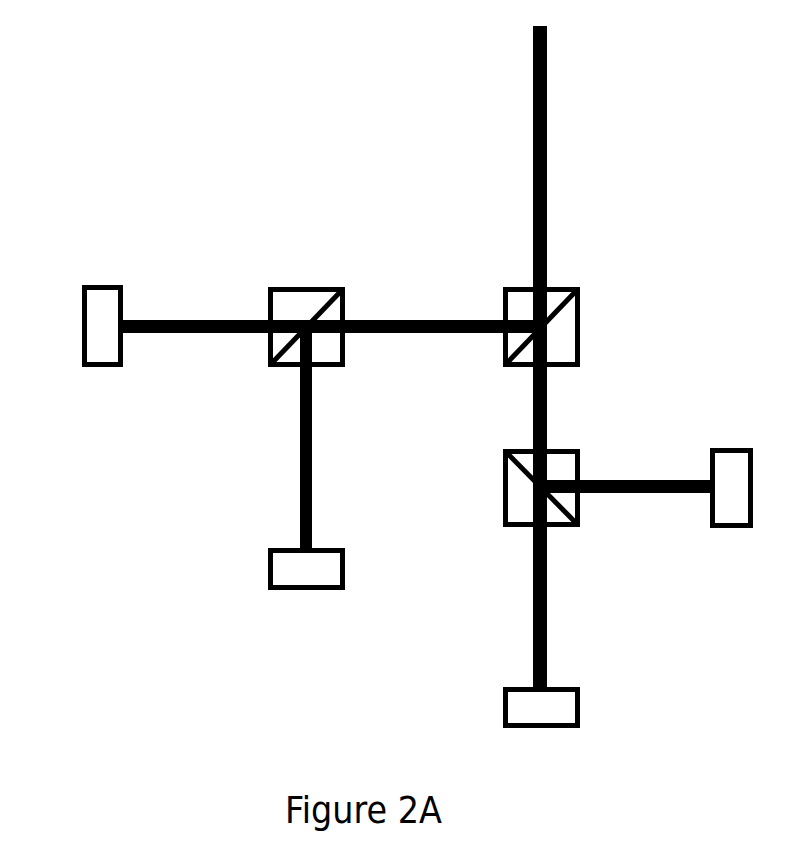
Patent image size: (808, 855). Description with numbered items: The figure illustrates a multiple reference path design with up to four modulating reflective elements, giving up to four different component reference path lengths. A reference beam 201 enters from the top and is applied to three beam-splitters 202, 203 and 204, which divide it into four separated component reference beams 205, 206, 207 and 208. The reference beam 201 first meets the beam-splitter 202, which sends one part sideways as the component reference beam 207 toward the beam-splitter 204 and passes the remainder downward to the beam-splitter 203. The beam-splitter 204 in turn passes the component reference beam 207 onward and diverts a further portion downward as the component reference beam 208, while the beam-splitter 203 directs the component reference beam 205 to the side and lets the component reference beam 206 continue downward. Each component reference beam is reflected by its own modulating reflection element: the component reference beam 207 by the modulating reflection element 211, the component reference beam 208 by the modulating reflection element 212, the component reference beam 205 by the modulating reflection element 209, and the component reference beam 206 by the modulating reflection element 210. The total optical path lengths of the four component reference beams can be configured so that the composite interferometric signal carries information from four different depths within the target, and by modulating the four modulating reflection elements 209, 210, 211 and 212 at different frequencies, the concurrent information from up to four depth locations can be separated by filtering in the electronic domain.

The reference beam 201 is at (529, 98).
The beam-splitter 202 is at (573, 272).
The beam-splitter 203 is at (573, 438).
The beam-splitter 204 is at (288, 277).
The component reference beam 205 is at (662, 498).
The component reference beam 206 is at (523, 579).
The component reference beam 207 is at (212, 305).
The component reference beam 208 is at (300, 493).
The modulating reflection element 209 is at (728, 533).
The modulating reflection element 210 is at (590, 710).
The modulating reflection element 211 is at (118, 370).
The modulating reflection element 212 is at (263, 567).